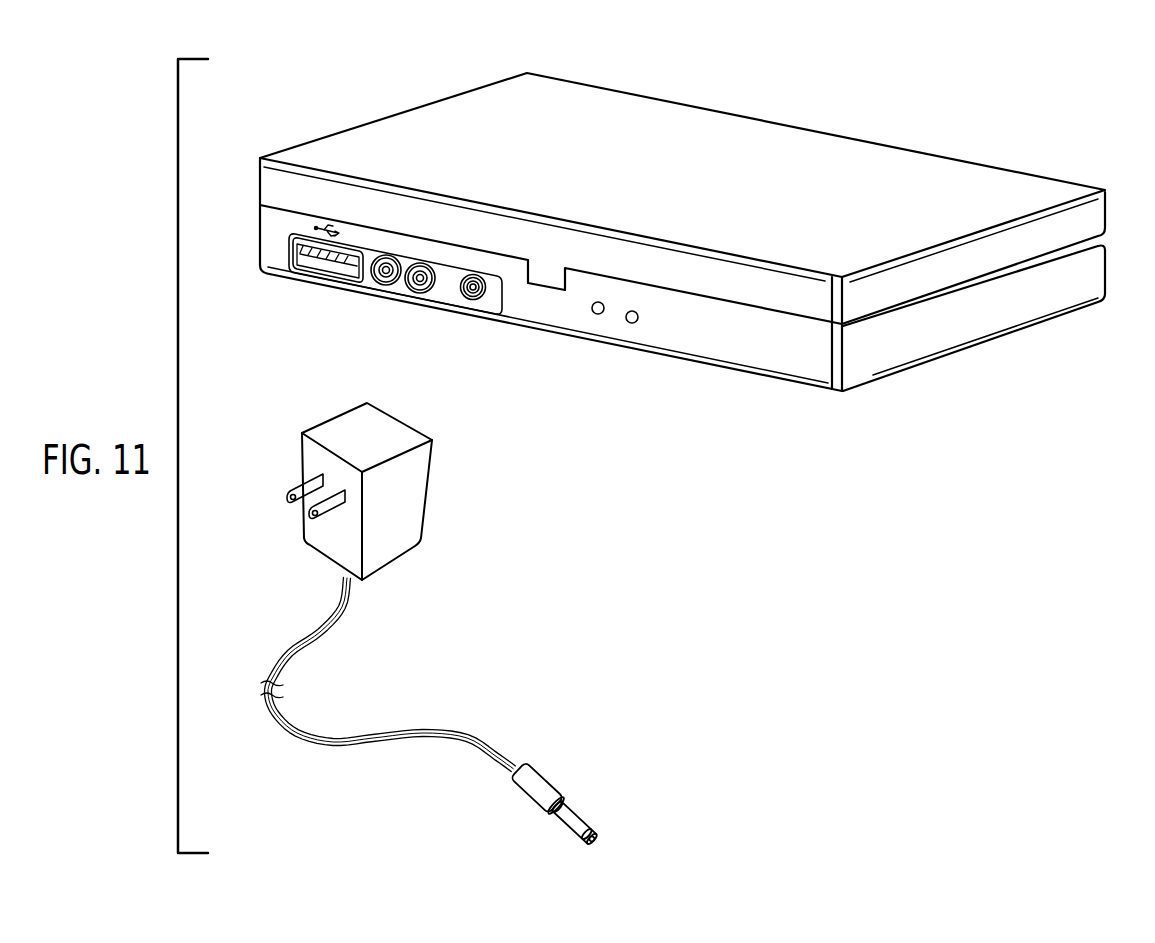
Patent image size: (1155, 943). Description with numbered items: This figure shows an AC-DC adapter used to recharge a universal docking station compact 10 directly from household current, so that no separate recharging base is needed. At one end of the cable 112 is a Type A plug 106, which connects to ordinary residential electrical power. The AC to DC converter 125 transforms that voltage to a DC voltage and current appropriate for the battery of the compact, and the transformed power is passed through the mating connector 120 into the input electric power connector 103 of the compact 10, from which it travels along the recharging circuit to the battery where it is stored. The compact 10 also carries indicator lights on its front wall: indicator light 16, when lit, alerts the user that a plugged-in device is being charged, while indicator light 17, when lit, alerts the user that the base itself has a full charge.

The compact 10 is at (682, 243).
The indicator light 16 is at (592, 303).
The indicator light 17 is at (632, 324).
The input electric power connector 103 is at (458, 297).
The Type A plug 106 is at (310, 513).
The cable 112 is at (366, 743).
The mating connector 120 is at (538, 778).
The AC to DC converter 125 is at (432, 468).